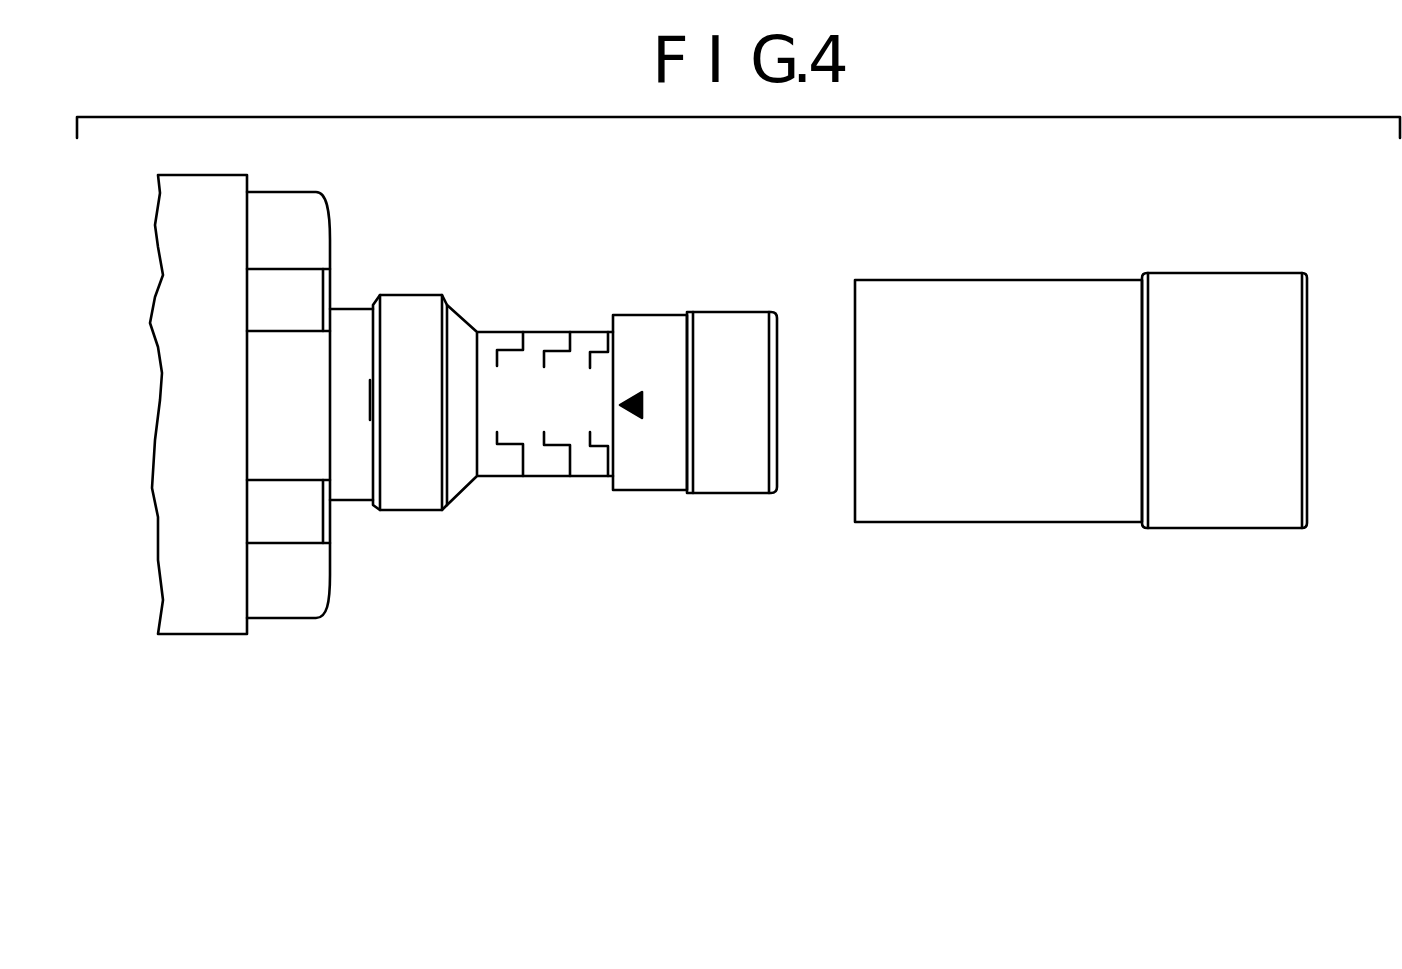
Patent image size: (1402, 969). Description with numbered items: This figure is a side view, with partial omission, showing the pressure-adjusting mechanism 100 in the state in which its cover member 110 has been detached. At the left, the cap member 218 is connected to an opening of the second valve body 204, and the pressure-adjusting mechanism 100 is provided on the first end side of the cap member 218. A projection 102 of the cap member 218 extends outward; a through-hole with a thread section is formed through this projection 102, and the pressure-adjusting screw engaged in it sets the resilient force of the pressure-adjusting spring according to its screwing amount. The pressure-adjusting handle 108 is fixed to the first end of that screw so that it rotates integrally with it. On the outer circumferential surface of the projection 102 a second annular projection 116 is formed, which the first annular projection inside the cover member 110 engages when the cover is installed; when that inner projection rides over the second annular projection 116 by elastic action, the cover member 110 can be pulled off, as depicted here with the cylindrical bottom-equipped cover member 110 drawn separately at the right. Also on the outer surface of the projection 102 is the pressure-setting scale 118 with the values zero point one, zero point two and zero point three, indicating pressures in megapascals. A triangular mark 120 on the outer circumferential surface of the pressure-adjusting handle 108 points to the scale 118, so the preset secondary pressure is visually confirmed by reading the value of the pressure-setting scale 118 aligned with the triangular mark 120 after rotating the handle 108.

The pressure-adjusting mechanism 100 is at (767, 283).
The projection 102 is at (545, 475).
The pressure-adjusting handle 108 is at (727, 480).
The cover member 110 is at (1192, 510).
The second annular projection 116 is at (418, 297).
The pressure-setting scale 118 is at (542, 332).
The triangular mark 120 is at (633, 392).
The second valve body 204 is at (225, 618).
The cap member 218 is at (315, 597).